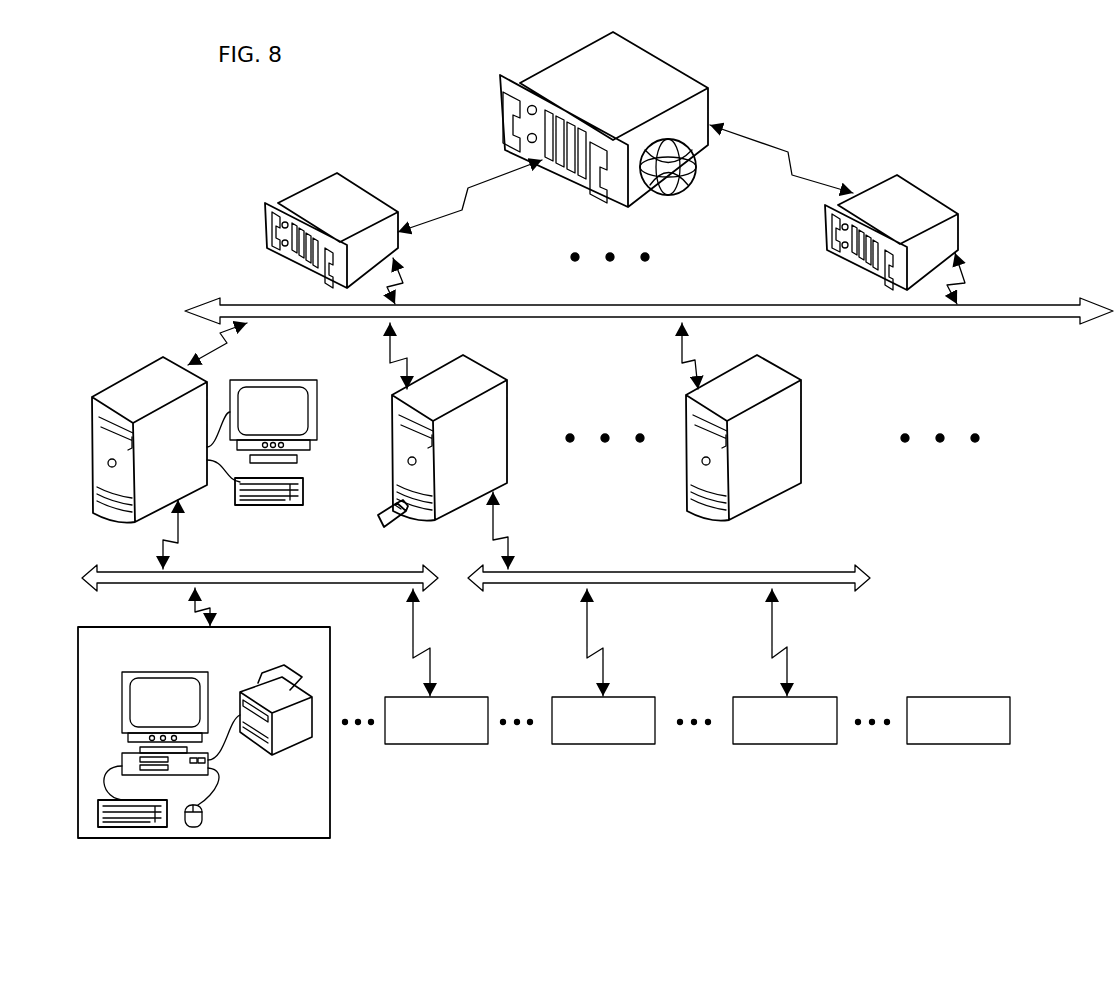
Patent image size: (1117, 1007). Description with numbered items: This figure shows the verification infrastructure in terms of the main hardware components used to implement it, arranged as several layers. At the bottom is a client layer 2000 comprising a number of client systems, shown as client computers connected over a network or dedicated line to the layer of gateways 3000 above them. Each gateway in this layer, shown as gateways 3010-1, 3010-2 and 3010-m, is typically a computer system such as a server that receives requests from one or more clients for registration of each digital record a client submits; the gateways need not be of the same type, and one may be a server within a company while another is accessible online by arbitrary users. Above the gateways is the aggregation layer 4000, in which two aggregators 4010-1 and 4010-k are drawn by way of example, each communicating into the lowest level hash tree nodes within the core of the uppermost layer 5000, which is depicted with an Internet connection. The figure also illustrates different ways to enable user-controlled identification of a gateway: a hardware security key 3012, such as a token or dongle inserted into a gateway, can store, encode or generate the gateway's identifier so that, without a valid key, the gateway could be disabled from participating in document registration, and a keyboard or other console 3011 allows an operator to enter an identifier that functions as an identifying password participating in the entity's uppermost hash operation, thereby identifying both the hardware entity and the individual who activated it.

The uppermost layer 5000 is at (725, 88).
The aggregation layer 4000 is at (649, 237).
The aggregator 4010-1 is at (300, 225).
The aggregator 4010-k is at (910, 182).
The layer of gateways 3000 is at (598, 446).
The gateway 3010-1 is at (103, 395).
The gateway 3010-2 is at (508, 423).
The gateway 3010-m is at (765, 503).
The console 3011 is at (318, 482).
The hardware security key 3012 is at (381, 528).
The client layer 2000 is at (1022, 725).